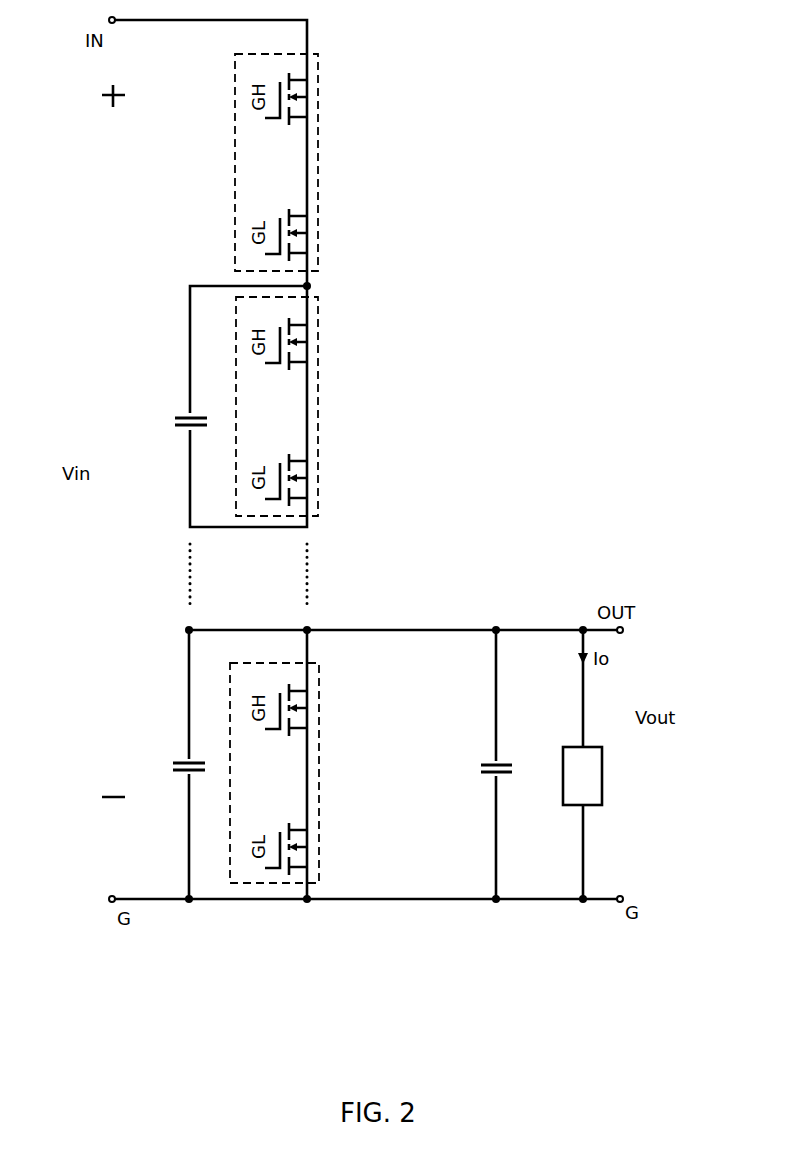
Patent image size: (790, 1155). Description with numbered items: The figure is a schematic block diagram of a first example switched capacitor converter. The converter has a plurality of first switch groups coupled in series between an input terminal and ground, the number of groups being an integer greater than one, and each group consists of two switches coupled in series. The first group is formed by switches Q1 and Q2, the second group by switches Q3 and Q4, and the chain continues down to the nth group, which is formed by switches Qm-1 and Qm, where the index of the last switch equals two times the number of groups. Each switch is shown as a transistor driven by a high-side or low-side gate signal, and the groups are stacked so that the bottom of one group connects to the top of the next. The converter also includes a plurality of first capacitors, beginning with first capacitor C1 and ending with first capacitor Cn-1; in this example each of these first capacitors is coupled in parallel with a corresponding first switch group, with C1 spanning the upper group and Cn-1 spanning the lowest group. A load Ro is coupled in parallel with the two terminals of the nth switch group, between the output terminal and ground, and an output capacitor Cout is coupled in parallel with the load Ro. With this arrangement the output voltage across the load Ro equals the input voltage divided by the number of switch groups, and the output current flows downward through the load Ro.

The switch Q1 is at (308, 99).
The switch Q2 is at (308, 235).
The switch Q3 is at (308, 344).
The switch Q4 is at (308, 480).
The switch Qm-1 is at (318, 710).
The switch Qm is at (309, 849).
The first capacitor C1 is at (177, 437).
The first capacitor Cn-1 is at (171, 784).
The output capacitor Cout is at (471, 773).
The load Ro is at (597, 780).